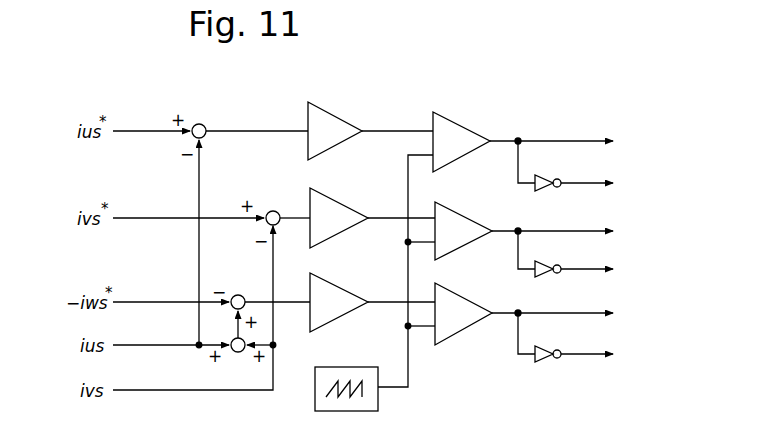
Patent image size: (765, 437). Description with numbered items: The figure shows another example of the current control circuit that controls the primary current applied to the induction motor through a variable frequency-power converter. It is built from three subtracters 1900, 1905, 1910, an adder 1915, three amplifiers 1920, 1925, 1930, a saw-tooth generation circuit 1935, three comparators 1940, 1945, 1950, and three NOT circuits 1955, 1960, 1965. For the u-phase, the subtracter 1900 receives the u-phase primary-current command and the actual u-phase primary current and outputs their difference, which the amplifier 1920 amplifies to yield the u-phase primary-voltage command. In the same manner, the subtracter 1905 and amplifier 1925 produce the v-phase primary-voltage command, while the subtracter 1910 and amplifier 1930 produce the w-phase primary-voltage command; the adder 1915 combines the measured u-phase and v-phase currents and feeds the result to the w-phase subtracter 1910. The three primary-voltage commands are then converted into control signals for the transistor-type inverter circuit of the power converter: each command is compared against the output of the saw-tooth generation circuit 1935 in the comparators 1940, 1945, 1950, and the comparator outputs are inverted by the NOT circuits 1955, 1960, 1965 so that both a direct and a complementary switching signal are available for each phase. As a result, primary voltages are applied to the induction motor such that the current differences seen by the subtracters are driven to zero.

The subtracter 1900 is at (203, 124).
The subtracter 1905 is at (274, 210).
The subtracter 1910 is at (238, 295).
The adder 1915 is at (238, 352).
The amplifier 1920 is at (335, 113).
The amplifier 1925 is at (342, 201).
The amplifier 1930 is at (344, 287).
The saw-tooth generation circuit 1935 is at (357, 366).
The comparator 1940 is at (461, 115).
The comparator 1945 is at (463, 209).
The comparator 1950 is at (463, 293).
The NOT circuit 1955 is at (545, 175).
The NOT circuit 1960 is at (545, 261).
The NOT circuit 1965 is at (547, 346).